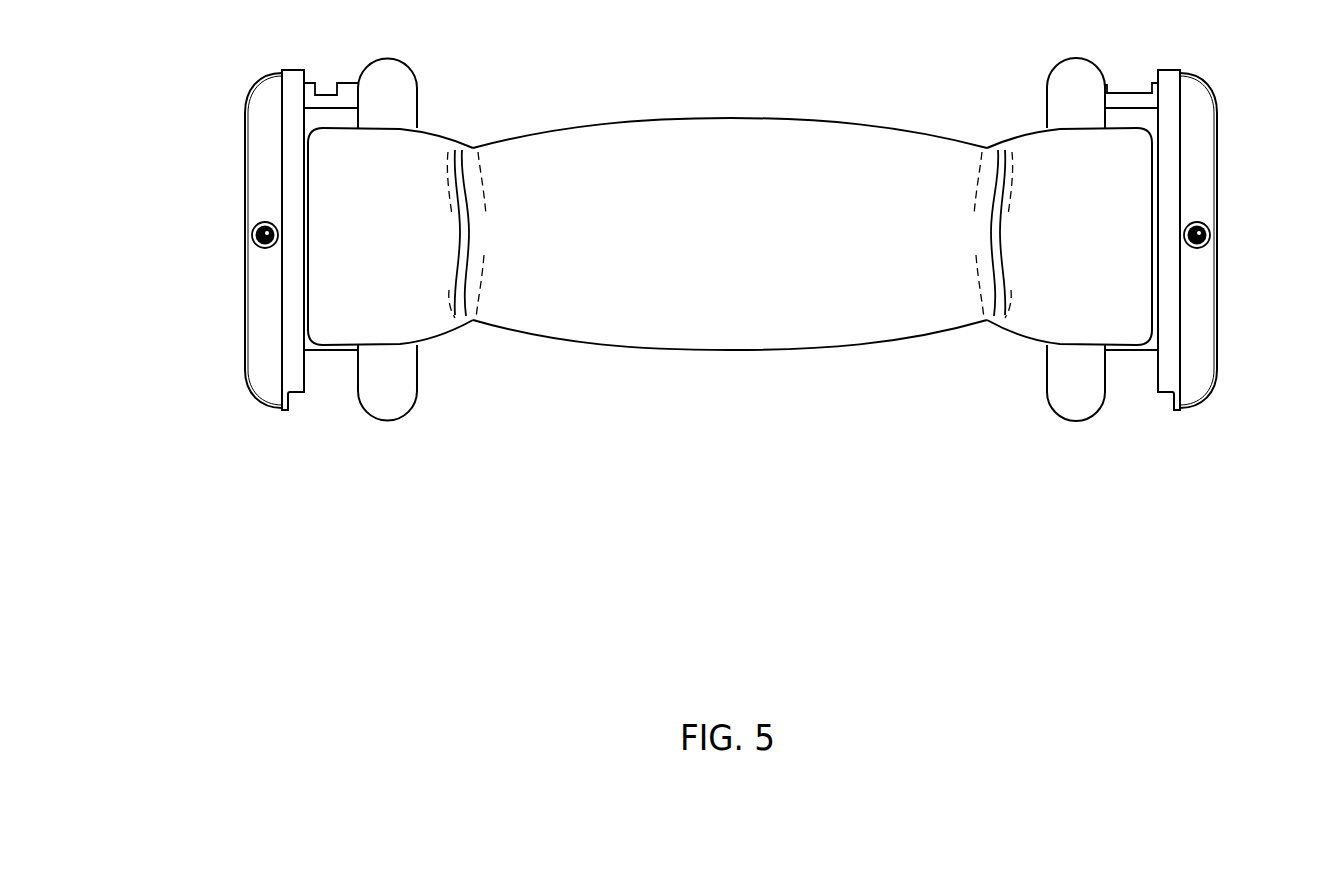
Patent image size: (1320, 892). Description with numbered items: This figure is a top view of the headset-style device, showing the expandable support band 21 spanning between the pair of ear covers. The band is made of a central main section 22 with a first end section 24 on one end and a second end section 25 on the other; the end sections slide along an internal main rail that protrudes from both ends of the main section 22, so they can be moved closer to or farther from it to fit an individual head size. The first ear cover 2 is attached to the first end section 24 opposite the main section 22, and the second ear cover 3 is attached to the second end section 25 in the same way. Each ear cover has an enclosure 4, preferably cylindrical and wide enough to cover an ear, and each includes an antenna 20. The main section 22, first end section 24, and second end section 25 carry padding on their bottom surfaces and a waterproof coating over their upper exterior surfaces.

The first ear cover 2 is at (257, 135).
The second ear cover 3 is at (1205, 140).
The enclosure 4 is at (242, 288).
The antenna 20 is at (255, 246).
The expandable support band 21 is at (691, 93).
The main section 22 is at (740, 327).
The first end section 24 is at (430, 322).
The second end section 25 is at (1032, 318).